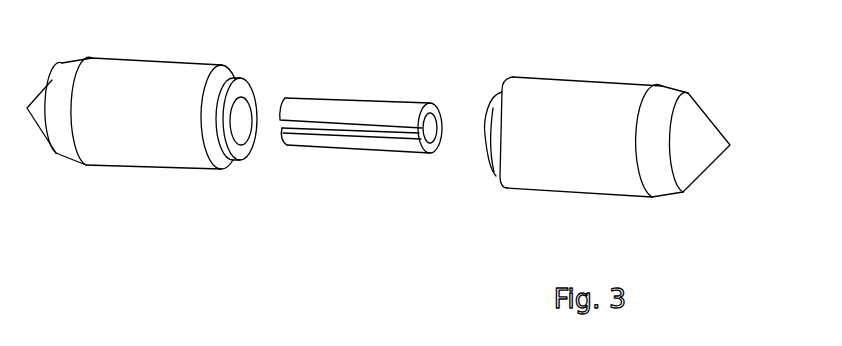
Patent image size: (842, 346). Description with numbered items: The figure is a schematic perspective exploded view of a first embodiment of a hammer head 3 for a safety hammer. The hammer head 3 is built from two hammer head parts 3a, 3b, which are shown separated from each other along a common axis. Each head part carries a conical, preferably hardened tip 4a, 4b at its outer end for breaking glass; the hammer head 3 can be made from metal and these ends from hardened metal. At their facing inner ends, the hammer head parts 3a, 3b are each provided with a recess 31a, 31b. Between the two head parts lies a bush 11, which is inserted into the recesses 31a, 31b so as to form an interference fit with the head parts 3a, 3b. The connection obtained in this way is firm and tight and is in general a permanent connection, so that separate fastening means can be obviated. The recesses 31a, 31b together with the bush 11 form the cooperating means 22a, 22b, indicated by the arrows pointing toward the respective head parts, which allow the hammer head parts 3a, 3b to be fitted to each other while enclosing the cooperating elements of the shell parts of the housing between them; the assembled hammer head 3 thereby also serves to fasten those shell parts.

The hammer head 3 is at (666, 63).
The hammer head part 3a is at (580, 137).
The hammer head part 3b is at (142, 113).
The hardened tip 4a is at (702, 143).
The hardened tip 4b is at (38, 108).
The bush 11 is at (355, 142).
The cooperating means 22a is at (465, 57).
The cooperating means 22b is at (271, 57).
The recess 31a is at (490, 173).
The recess 31b is at (237, 146).